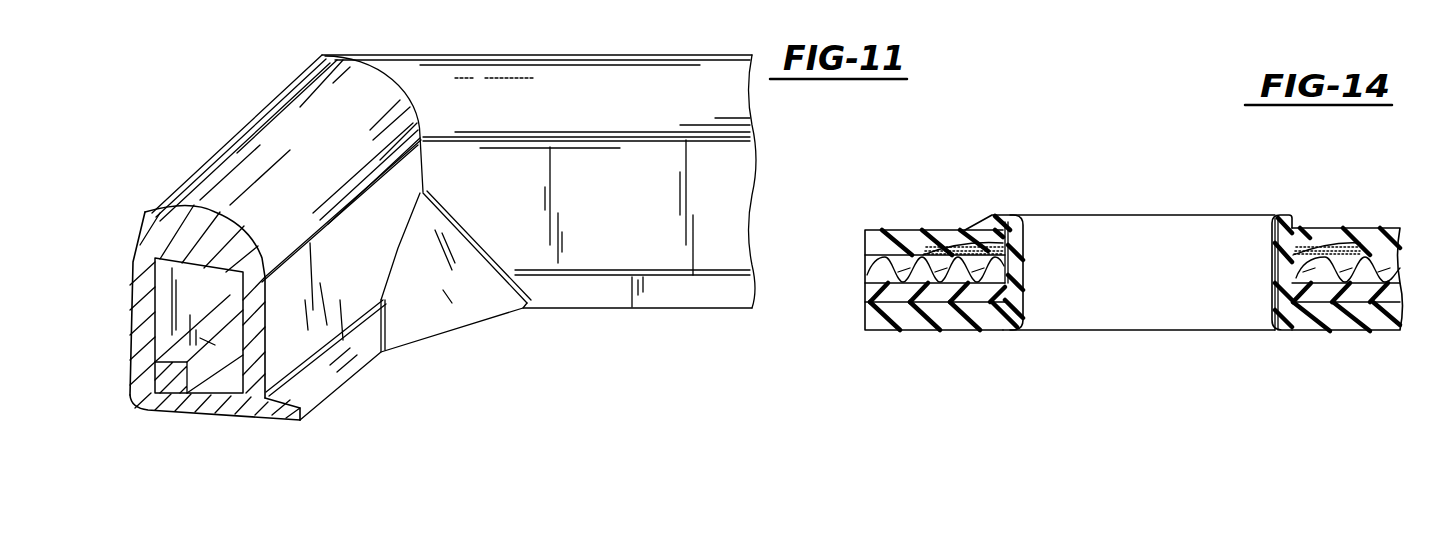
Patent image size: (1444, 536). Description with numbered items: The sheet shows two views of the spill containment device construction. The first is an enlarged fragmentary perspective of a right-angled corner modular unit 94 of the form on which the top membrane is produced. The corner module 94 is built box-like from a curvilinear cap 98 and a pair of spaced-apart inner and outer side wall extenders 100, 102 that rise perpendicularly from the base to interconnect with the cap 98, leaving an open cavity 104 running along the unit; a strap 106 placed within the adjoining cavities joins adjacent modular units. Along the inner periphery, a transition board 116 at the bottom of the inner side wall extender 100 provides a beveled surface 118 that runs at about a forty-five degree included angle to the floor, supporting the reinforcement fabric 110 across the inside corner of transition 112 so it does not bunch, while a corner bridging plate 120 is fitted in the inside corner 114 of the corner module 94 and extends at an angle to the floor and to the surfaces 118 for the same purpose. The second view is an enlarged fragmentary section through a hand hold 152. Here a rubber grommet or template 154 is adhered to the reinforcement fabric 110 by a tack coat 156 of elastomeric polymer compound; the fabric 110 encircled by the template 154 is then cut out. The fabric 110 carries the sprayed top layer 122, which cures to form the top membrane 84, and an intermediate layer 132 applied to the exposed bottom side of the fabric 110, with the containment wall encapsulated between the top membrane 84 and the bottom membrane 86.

In FIG. 14, the top membrane 84 is at (856, 240).
In FIG. 14, the bottom membrane 86 is at (985, 323).
In FIG. 11, the right-angled corner modular unit 94 is at (256, 108).
In FIG. 11, the curvilinear cap 98 is at (150, 212).
In FIG. 11, the inner side wall extender 100 is at (283, 313).
In FIG. 11, the outer side wall extender 102 is at (133, 262).
In FIG. 11, the cavity 104 is at (163, 288).
In FIG. 11, the strap 106 is at (150, 396).
In FIG. 14, the reinforcement fabric 110 is at (1007, 254).
In FIG. 11, the inside corner of transition 112 is at (272, 417).
In FIG. 11, the inside corner of corner module 114 is at (453, 250).
In FIG. 11, the transition board 116 is at (300, 420).
In FIG. 11, the beveled surface 118 is at (353, 366).
In FIG. 11, the corner bridging plate 120 is at (487, 308).
In FIG. 14, the top layer 122 is at (885, 235).
In FIG. 14, the intermediate layer 132 is at (1005, 292).
In FIG. 14, the hand hold 152 is at (1186, 210).
In FIG. 14, the template 154 is at (970, 227).
In FIG. 14, the tack coat 156 is at (963, 240).